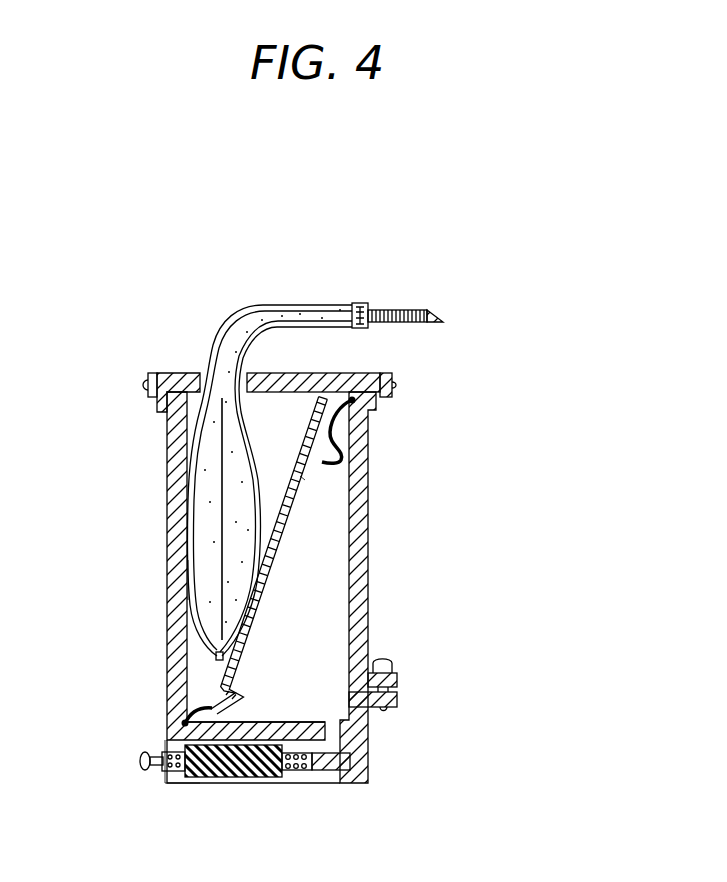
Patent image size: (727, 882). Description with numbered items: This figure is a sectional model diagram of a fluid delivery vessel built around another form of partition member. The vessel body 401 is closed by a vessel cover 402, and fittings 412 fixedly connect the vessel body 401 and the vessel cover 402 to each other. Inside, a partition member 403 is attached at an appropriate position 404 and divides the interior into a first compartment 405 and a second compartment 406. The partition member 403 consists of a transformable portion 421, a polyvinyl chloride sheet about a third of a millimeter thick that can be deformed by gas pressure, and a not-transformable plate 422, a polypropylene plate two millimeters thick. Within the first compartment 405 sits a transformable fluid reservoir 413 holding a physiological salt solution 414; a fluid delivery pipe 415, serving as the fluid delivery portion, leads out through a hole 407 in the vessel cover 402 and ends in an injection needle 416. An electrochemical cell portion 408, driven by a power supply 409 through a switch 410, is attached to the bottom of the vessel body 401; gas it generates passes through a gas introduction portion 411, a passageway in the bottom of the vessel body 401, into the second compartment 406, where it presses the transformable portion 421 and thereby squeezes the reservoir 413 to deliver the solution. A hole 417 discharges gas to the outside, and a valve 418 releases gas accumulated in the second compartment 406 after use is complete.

The vessel body 401 is at (167, 667).
The vessel cover 402 is at (377, 370).
The partition member 403 is at (513, 333).
The attachment position 404 is at (163, 777).
The first compartment 405 is at (277, 417).
The second compartment 406 is at (290, 615).
The hole 407 is at (205, 378).
The electrochemical cell portion 408 is at (327, 777).
The power supply 409 is at (255, 777).
The switch 410 is at (140, 767).
The gas introduction portion 411 is at (332, 734).
The fittings 412 is at (147, 382).
The transformable fluid reservoir 413 is at (288, 521).
The physiological salt solution 414 is at (187, 590).
The fluid delivery pipe 415 is at (292, 315).
The injection needle 416 is at (400, 307).
The hole for discharging gas 417 is at (332, 777).
The valve 418 is at (392, 664).
The transformable portion 421 is at (332, 423).
The not-transformable plate 422 is at (302, 477).